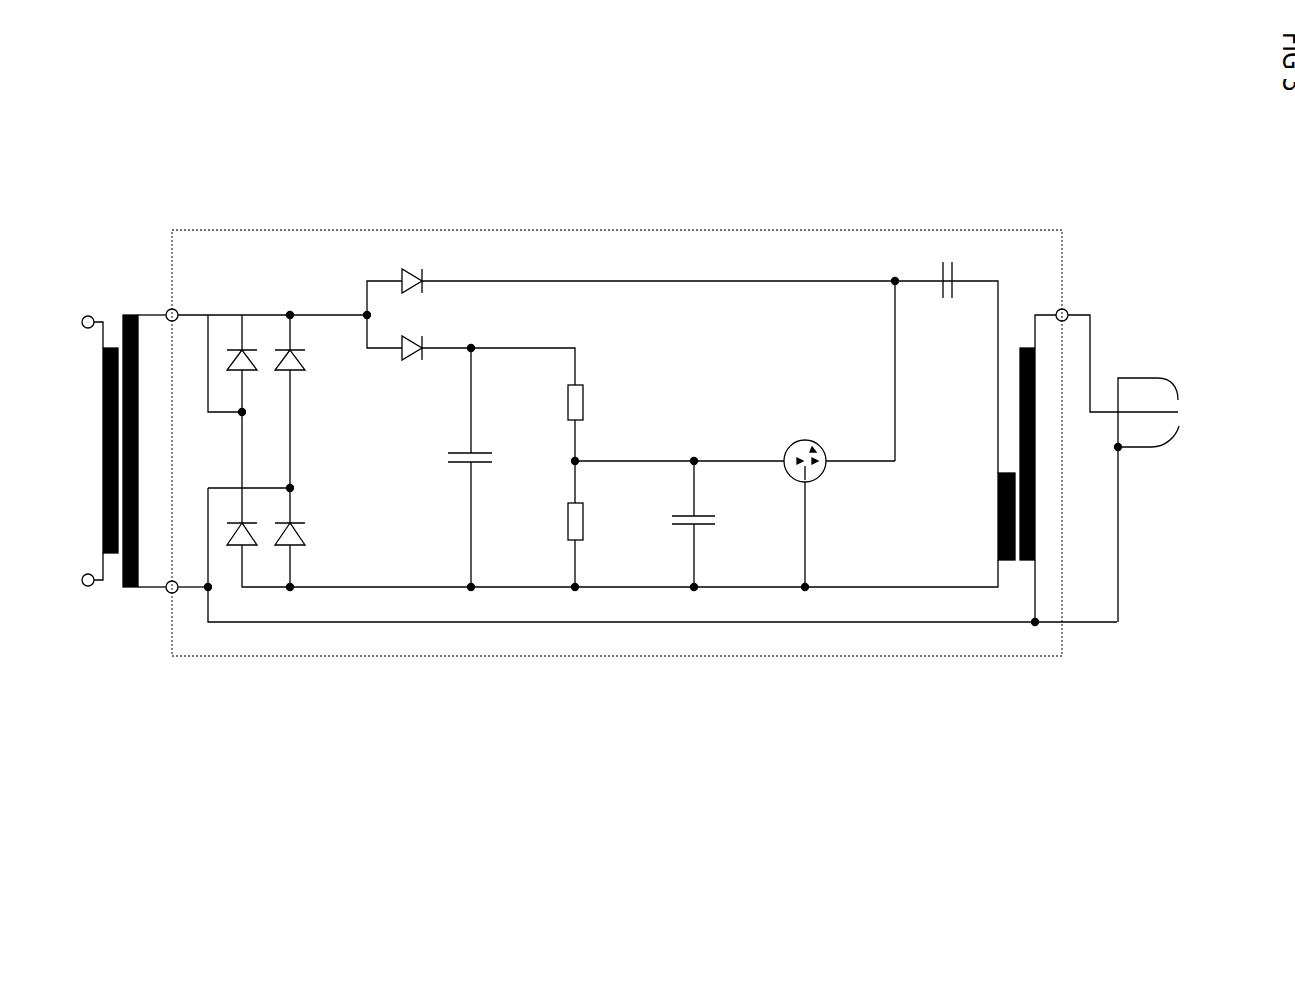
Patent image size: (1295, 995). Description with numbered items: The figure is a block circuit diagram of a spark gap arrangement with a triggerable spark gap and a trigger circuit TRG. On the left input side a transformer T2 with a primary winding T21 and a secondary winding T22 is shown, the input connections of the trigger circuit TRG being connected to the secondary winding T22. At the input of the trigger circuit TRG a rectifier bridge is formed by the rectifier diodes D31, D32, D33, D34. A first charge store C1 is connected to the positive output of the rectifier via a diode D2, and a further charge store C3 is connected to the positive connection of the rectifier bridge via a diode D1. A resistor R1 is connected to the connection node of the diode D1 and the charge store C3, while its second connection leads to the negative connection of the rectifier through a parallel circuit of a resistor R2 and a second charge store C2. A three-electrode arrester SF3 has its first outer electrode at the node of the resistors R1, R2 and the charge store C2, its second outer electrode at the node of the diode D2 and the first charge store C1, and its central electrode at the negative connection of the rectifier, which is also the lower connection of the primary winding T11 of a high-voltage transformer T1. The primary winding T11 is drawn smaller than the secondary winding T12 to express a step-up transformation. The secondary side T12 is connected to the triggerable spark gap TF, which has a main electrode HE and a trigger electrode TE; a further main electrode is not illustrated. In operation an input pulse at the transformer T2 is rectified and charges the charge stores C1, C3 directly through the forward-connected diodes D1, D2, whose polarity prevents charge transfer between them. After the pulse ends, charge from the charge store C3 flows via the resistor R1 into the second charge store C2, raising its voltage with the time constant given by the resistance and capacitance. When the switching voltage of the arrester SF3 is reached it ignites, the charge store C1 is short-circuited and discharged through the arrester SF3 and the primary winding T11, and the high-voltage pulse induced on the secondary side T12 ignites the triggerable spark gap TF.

The trigger circuit TRG is at (617, 656).
The transformer T2 is at (134, 449).
The primary winding T21 is at (113, 340).
The secondary winding T22 is at (132, 308).
The rectifier diode D31 is at (227, 350).
The rectifier diode D32 is at (303, 370).
The rectifier diode D33 is at (227, 523).
The rectifier diode D34 is at (305, 545).
The diode D1 is at (404, 358).
The diode D2 is at (424, 285).
The further charge store C3 is at (471, 462).
The resistor R1 is at (568, 400).
The resistor R2 is at (568, 518).
The second charge store C2 is at (672, 517).
The three-electrode arrester SF3 is at (790, 447).
The first charge store C1 is at (943, 298).
The high-voltage transformer T1 is at (1057, 529).
The primary winding T11 is at (998, 515).
The secondary winding T12 is at (1037, 452).
The triggerable spark gap TF is at (1194, 447).
The trigger electrode TE is at (1180, 412).
The main electrode HE is at (1152, 447).